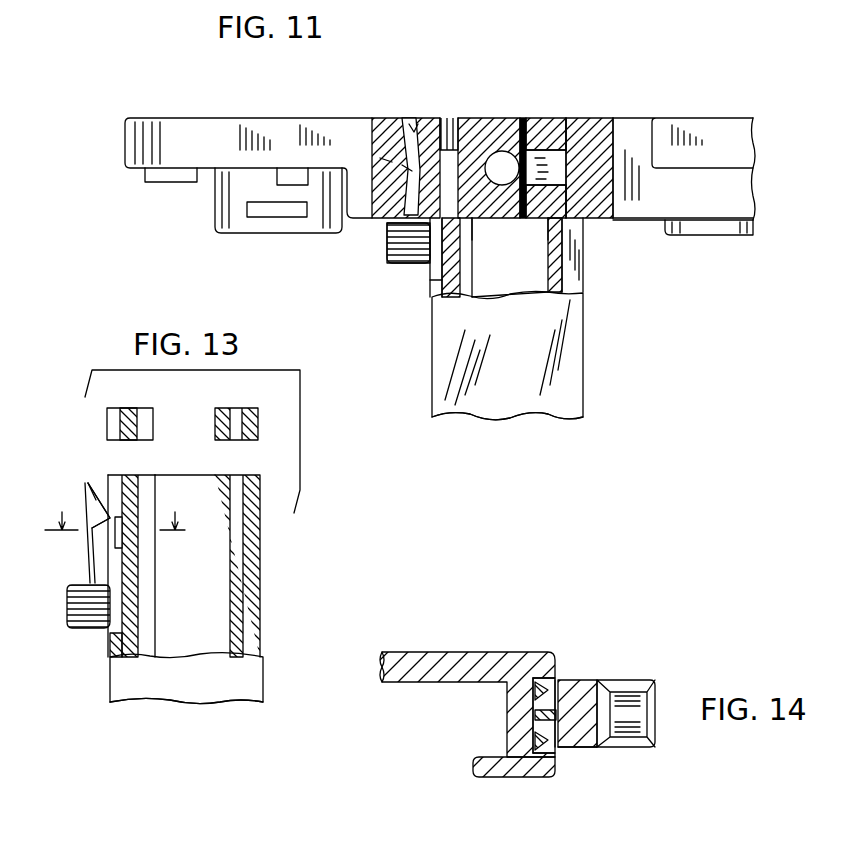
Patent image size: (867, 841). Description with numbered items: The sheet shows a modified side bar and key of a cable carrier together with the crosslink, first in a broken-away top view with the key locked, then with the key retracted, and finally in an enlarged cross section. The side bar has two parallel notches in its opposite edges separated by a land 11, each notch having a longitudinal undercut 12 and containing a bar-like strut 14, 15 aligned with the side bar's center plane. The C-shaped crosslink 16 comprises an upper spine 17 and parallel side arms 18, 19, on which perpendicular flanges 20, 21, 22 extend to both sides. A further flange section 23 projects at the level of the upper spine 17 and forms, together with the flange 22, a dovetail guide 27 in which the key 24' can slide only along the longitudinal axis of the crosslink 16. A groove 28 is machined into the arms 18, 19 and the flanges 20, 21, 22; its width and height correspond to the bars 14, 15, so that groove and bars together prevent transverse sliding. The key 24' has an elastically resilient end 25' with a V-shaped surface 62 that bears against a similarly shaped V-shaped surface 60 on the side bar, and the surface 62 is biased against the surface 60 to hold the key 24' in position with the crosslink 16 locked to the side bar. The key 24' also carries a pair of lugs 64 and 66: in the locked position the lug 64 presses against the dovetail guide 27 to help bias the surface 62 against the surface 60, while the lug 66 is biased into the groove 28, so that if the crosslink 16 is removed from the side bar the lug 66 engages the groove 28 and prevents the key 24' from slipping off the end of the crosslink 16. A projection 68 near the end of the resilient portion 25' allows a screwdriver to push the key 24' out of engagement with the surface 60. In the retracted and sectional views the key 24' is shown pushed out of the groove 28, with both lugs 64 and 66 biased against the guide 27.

In FIG. 11, the land 11 is at (482, 120).
In FIG. 11, the undercut 12 is at (377, 116).
In FIG. 11, the bar-like strut 14 is at (530, 158).
In FIG. 13, the bar-like strut 14 is at (116, 510).
In FIG. 11, the bar-like strut 15 is at (380, 158).
In FIG. 11, the crosslink 16 is at (583, 342).
In FIG. 13, the crosslink 16 is at (108, 681).
In FIG. 14, the crosslink 16 is at (468, 650).
In FIG. 11, the upper spine 17 is at (528, 420).
In FIG. 13, the upper spine 17 is at (187, 702).
In FIG. 14, the upper spine 17 is at (388, 652).
In FIG. 11, the arm 18 is at (560, 285).
In FIG. 13, the arm 18 is at (235, 408).
In FIG. 11, the arm 19 is at (494, 315).
In FIG. 13, the arm 19 is at (131, 408).
In FIG. 14, the arm 19 is at (510, 708).
In FIG. 11, the flange 20 is at (580, 252).
In FIG. 13, the flange 20 is at (257, 425).
In FIG. 11, the flange 21 is at (465, 262).
In FIG. 13, the flange 21 is at (150, 430).
In FIG. 14, the flange 21 is at (518, 778).
In FIG. 11, the flange 22 is at (430, 290).
In FIG. 13, the flange 22 is at (120, 476).
In FIG. 14, the flange 22 is at (555, 760).
In FIG. 14, the flange section 23 is at (555, 680).
In FIG. 13, the key 24' is at (63, 606).
In FIG. 14, the key 24' is at (650, 693).
In FIG. 13, the elastically resilient end 25' is at (59, 485).
In FIG. 14, the elastically resilient end 25' is at (597, 766).
In FIG. 11, the dovetail guide 27 is at (432, 280).
In FIG. 13, the dovetail guide 27 is at (110, 638).
In FIG. 14, the dovetail guide 27 is at (540, 718).
In FIG. 11, the groove 28 is at (542, 236).
In FIG. 13, the groove 28 is at (152, 476).
In FIG. 11, the V-shaped surface 60 is at (388, 240).
In FIG. 11, the surface 62 is at (398, 118).
In FIG. 13, the surface 62 is at (87, 553).
In FIG. 14, the surface 62 is at (596, 682).
In FIG. 13, the lug 64 is at (121, 530).
In FIG. 14, the lug 64 is at (535, 694).
In FIG. 11, the lug 66 is at (402, 167).
In FIG. 14, the lug 66 is at (540, 736).
In FIG. 11, the projection 68 is at (412, 118).
In FIG. 13, the projection 68 is at (98, 483).